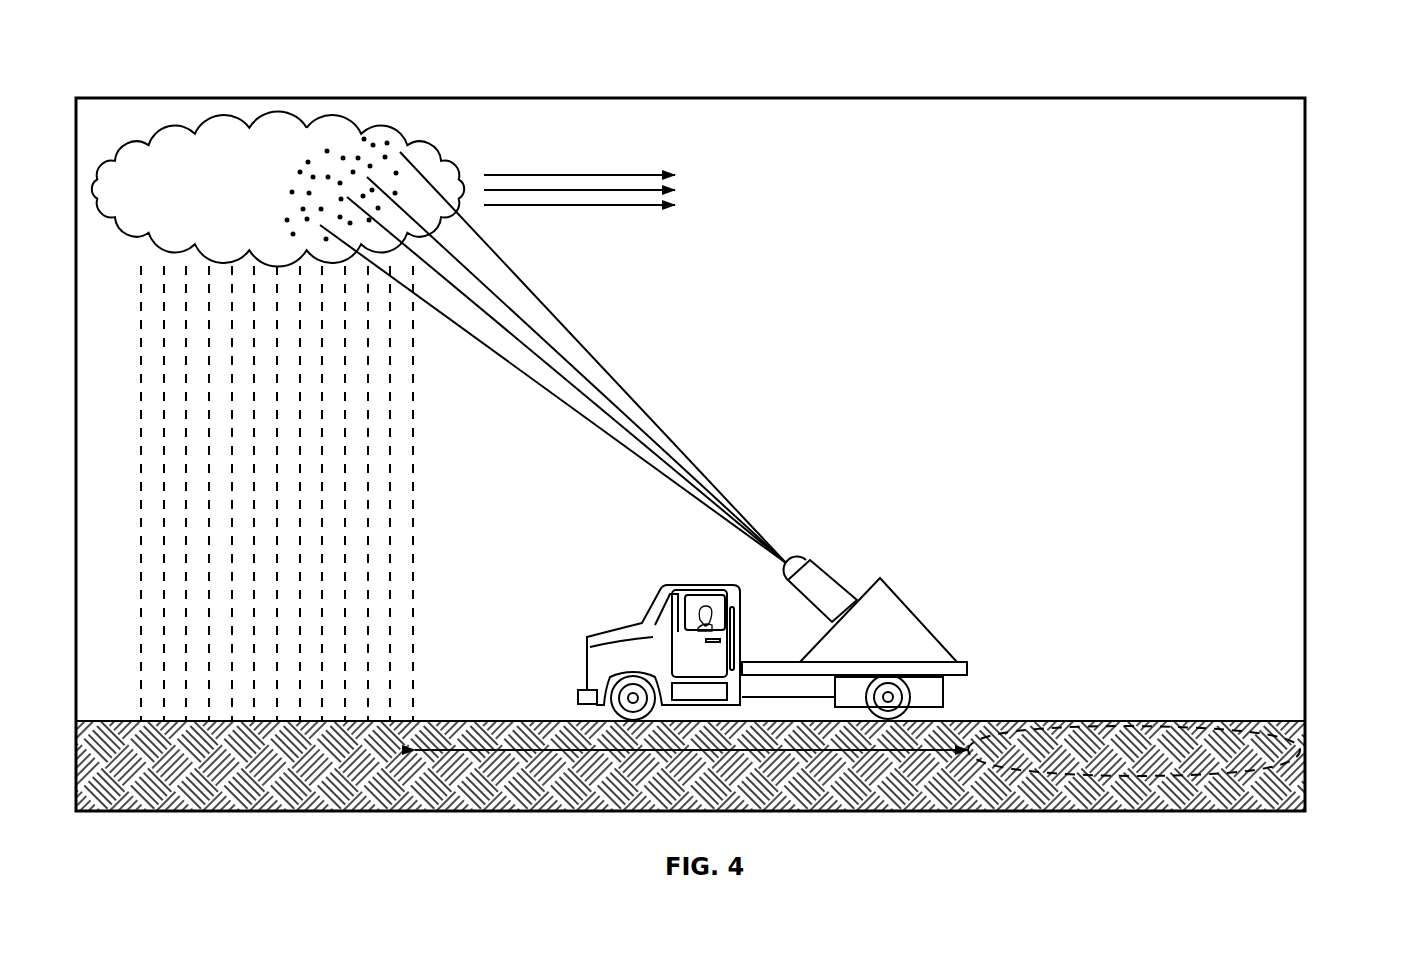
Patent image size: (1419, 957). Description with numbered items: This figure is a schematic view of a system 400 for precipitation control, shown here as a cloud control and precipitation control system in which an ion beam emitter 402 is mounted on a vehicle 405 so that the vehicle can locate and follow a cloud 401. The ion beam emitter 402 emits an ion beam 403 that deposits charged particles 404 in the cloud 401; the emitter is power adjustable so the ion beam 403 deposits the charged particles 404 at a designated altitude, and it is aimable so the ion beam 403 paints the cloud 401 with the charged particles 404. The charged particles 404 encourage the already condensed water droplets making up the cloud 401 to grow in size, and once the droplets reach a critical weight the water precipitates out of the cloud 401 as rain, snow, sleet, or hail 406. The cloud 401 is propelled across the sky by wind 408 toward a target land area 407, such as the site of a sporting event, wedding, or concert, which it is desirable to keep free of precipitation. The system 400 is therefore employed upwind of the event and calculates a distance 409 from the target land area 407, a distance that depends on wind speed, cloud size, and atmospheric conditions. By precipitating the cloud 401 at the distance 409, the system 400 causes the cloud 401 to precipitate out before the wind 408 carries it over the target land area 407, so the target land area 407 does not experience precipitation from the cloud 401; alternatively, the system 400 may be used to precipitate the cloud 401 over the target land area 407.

The system for precipitation control 400 is at (1314, 106).
The cloud 401 is at (118, 222).
The ion beam emitter 402 is at (818, 563).
The ion beam 403 is at (628, 390).
The charged particles 404 is at (327, 151).
The vehicle 405 is at (605, 632).
The rain, snow, sleet, or hail 406 is at (424, 400).
The target land area 407 is at (1060, 722).
The wind 408 is at (565, 175).
The distance 409 is at (691, 751).